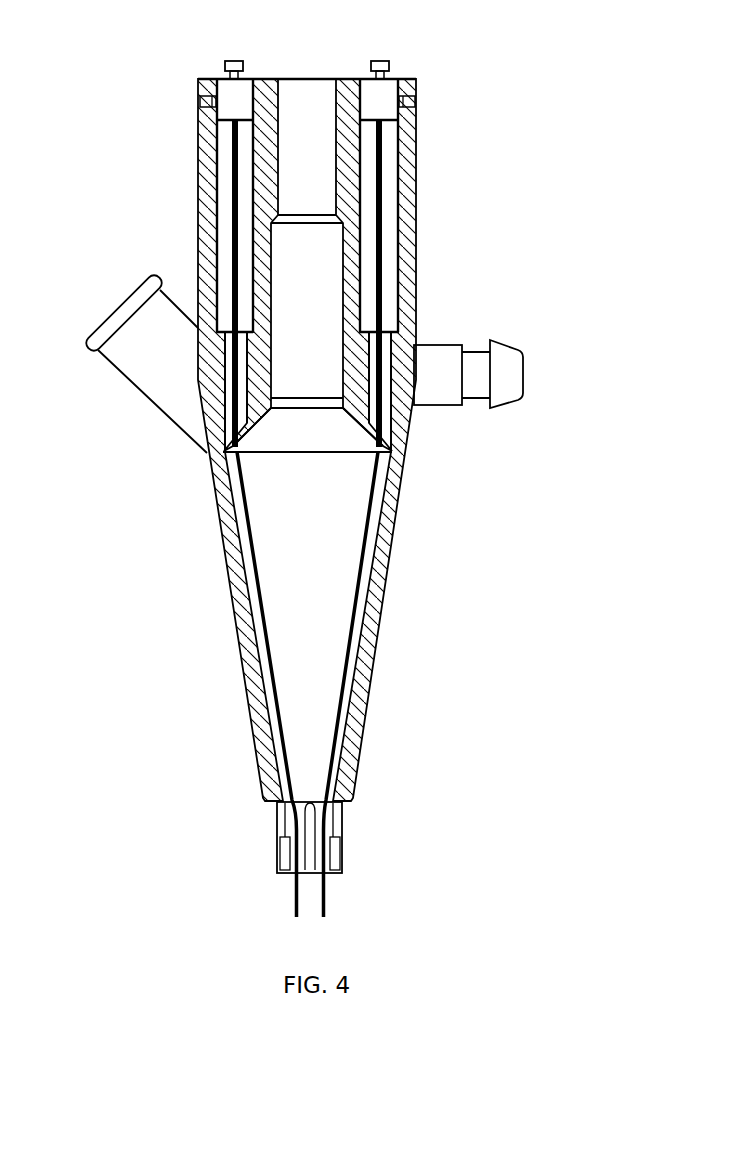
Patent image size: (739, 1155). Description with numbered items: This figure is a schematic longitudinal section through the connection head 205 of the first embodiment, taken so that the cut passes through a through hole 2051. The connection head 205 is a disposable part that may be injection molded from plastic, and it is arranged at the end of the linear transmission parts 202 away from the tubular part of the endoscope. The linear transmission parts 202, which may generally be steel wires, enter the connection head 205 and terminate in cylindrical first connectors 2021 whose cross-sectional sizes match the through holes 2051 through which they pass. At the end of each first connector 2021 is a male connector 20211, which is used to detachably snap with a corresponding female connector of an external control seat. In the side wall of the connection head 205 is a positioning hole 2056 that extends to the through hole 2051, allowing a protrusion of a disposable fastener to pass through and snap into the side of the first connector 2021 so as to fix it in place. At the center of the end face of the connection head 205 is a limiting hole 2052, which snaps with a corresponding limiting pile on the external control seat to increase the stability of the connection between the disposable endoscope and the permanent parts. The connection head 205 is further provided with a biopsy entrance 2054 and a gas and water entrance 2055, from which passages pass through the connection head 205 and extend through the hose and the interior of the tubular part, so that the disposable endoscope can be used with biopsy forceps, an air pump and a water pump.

The connection head 205 is at (407, 297).
The through hole 2051 is at (222, 212).
The limiting hole 2052 is at (297, 83).
The first connector 2021 is at (222, 101).
The male connector 20211 is at (389, 65).
The positioning hole 2056 is at (413, 108).
The biopsy entrance 2054 is at (138, 375).
The gas and water entrance 2055 is at (500, 400).
The linear transmission part 202 is at (240, 483).